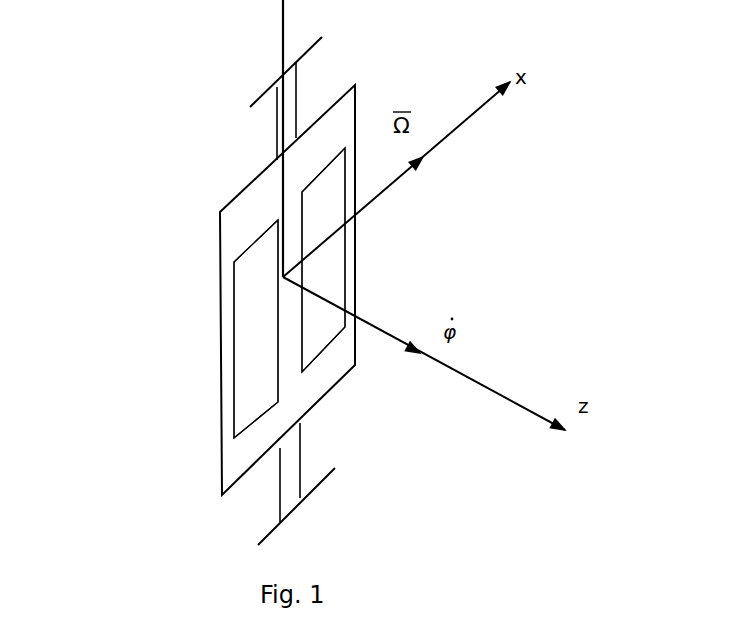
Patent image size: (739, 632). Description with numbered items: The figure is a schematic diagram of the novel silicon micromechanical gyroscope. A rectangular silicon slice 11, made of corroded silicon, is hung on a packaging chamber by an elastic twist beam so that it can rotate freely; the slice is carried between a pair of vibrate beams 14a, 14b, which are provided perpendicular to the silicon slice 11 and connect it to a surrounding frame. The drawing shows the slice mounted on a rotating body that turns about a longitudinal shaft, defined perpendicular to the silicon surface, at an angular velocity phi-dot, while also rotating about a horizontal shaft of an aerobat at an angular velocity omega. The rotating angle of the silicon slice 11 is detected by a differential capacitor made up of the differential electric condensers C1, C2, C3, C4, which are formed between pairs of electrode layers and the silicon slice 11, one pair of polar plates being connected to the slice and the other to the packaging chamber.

The silicon slice 11 is at (245, 457).
The vibrate beam 14a is at (277, 132).
The vibrate beam 14b is at (302, 451).
The differential electric condenser C1 is at (158, 352).
The differential electric condenser C2 is at (257, 317).
The differential electric condenser C3 is at (335, 268).
The differential electric condenser C4 is at (466, 260).